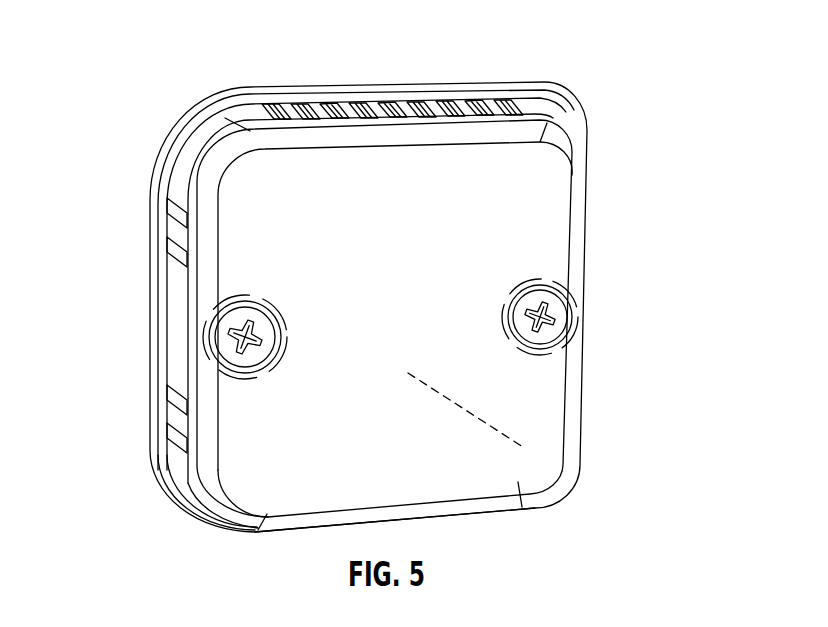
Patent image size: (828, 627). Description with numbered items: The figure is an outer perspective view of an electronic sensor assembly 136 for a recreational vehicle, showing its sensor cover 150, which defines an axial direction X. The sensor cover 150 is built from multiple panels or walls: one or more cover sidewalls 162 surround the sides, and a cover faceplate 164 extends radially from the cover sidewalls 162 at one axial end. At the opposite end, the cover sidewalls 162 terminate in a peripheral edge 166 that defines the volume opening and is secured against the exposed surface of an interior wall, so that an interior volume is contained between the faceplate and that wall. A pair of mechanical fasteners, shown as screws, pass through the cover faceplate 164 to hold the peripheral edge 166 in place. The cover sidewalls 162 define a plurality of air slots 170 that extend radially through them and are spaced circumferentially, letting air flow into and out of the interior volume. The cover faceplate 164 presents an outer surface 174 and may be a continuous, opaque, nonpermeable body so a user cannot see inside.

The electronic sensor assembly 136 is at (592, 87).
The sensor cover 150 is at (574, 147).
The cover sidewall 162 is at (178, 319).
The cover faceplate 164 is at (520, 484).
The peripheral edge 166 is at (184, 105).
The air slots 170 is at (337, 104).
The outer surface 174 is at (284, 499).